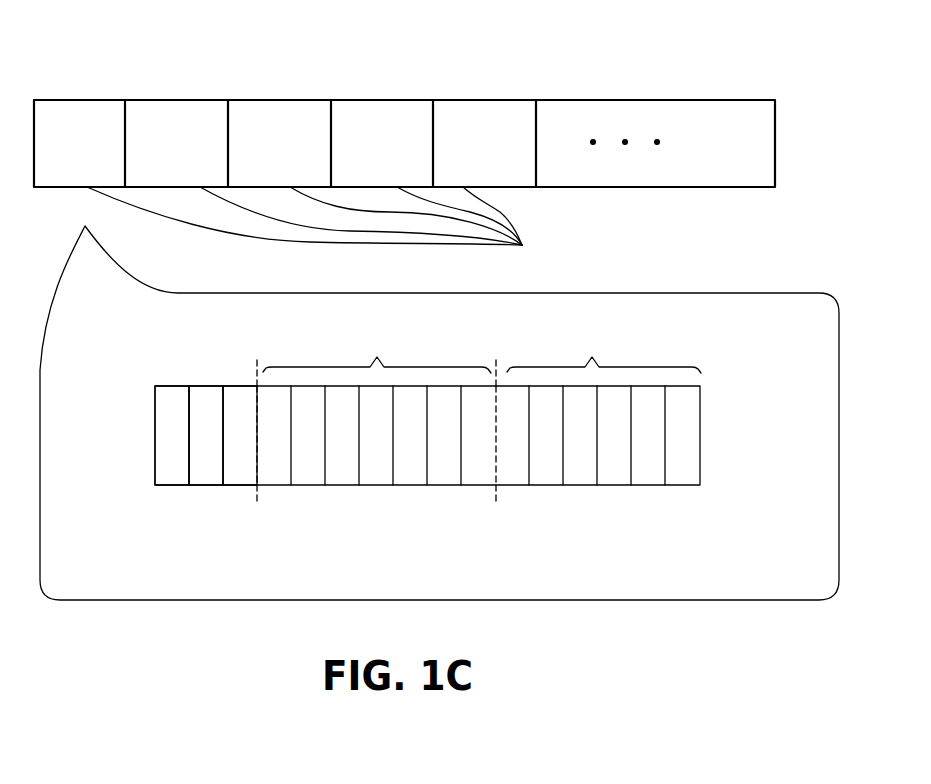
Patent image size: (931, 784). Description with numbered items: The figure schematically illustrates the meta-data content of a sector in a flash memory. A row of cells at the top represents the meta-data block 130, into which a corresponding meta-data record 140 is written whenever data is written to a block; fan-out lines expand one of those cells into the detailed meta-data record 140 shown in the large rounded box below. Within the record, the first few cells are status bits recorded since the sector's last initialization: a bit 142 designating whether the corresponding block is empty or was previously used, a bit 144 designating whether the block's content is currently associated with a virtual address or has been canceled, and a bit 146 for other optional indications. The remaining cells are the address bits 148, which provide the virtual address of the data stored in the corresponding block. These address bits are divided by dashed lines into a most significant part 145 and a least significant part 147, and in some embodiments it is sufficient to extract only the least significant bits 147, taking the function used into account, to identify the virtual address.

The meta-data block 130 is at (90, 99).
The meta-data record 140 is at (321, 232).
The bit designating if the corresponding block is empty 142 is at (160, 486).
The bit designating association with a virtual address 144 is at (207, 486).
The bit for other optional indications 146 is at (248, 486).
The most significant part 145 is at (443, 358).
The least significant part 147 is at (668, 358).
The address bits 148 is at (703, 513).